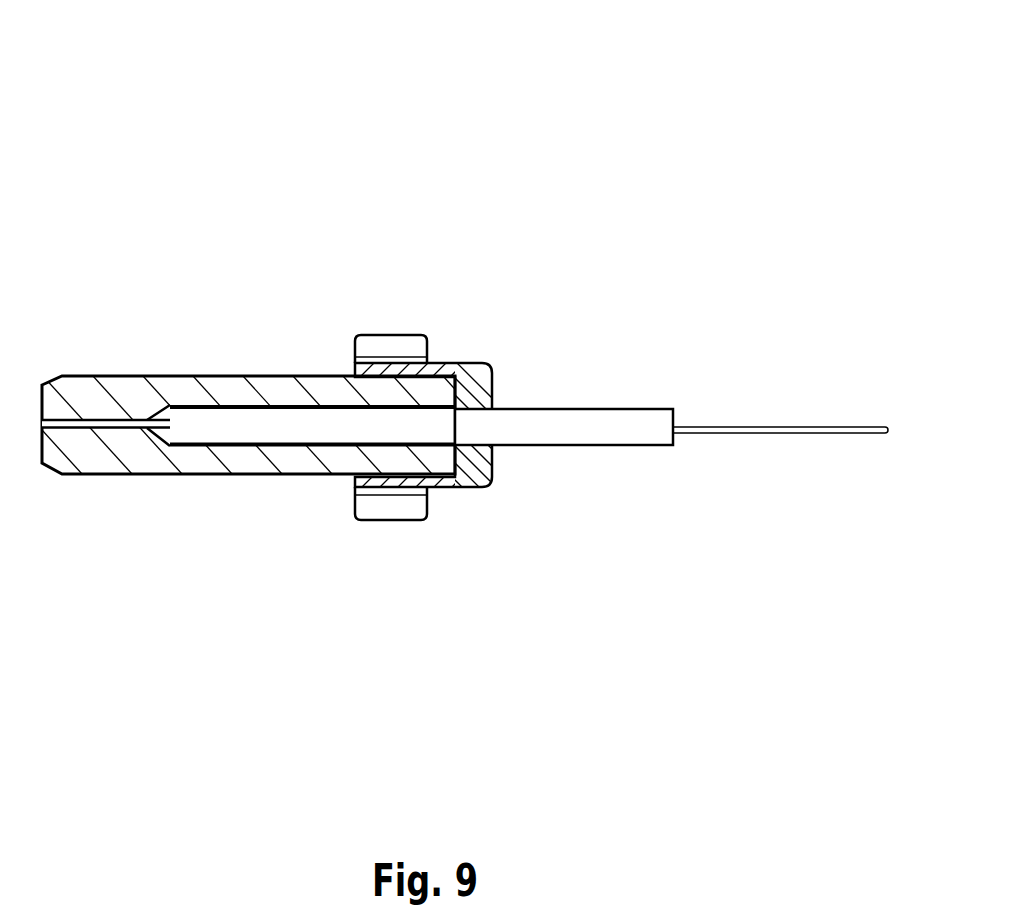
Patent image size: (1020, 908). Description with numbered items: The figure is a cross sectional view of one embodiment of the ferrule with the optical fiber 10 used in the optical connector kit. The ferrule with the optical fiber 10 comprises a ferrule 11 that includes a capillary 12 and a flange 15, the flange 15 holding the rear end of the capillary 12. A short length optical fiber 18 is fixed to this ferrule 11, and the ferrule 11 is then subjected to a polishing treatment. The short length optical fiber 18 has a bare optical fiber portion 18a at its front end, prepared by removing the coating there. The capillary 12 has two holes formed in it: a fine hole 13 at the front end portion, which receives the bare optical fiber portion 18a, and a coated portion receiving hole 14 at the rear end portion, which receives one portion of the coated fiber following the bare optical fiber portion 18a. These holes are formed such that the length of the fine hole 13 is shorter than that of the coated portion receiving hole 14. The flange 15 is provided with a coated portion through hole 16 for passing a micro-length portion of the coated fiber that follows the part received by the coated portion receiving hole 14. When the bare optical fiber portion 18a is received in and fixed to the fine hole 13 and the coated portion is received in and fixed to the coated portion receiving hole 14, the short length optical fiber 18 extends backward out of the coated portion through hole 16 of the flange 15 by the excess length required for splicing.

The ferrule with the optical fiber 10 is at (548, 130).
The ferrule 11 is at (412, 238).
The capillary 12 is at (250, 375).
The fine hole 13 is at (98, 428).
The coated portion receiving hole 14 is at (258, 447).
The flange 15 is at (389, 334).
The coated portion through hole 16 is at (467, 448).
The short length optical fiber 18 is at (550, 409).
The bare optical fiber portion 18a is at (76, 418).